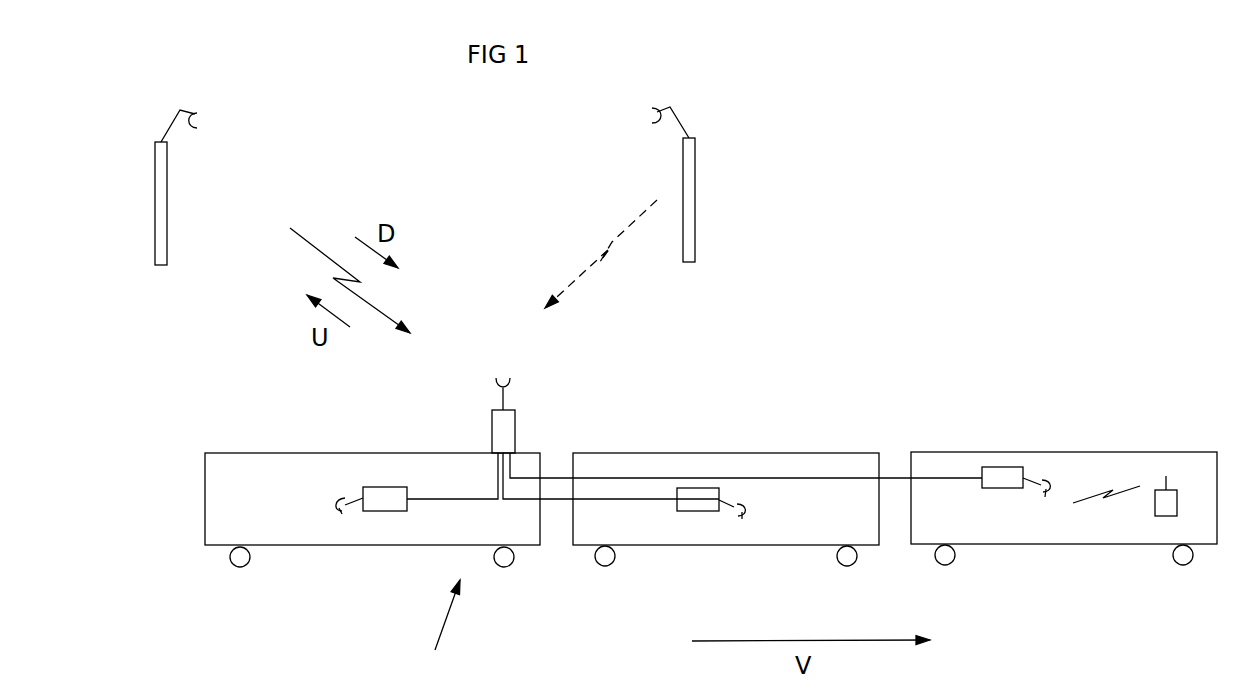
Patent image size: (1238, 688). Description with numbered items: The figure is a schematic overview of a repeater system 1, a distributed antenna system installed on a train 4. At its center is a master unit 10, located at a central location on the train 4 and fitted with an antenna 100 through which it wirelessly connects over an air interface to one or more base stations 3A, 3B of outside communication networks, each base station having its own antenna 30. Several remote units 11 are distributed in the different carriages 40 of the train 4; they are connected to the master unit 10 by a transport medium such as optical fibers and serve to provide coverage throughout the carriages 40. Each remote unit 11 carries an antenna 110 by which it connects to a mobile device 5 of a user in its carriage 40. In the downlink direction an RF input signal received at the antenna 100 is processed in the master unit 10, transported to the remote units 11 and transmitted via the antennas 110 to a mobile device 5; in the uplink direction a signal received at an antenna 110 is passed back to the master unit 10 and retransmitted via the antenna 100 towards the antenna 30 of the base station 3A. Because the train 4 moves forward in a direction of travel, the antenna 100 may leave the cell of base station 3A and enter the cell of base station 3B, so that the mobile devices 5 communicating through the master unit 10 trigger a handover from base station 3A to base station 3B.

The repeater system 1 is at (440, 633).
The train 4 is at (183, 508).
The carriage 40 is at (318, 452).
The master unit 10 is at (512, 420).
The antenna 100 is at (503, 378).
The remote unit 11 is at (375, 503).
The antenna 110 is at (342, 508).
The mobile device 5 is at (1168, 507).
The base station 3A is at (160, 202).
The base station 3B is at (688, 210).
The antenna 30 is at (202, 110).